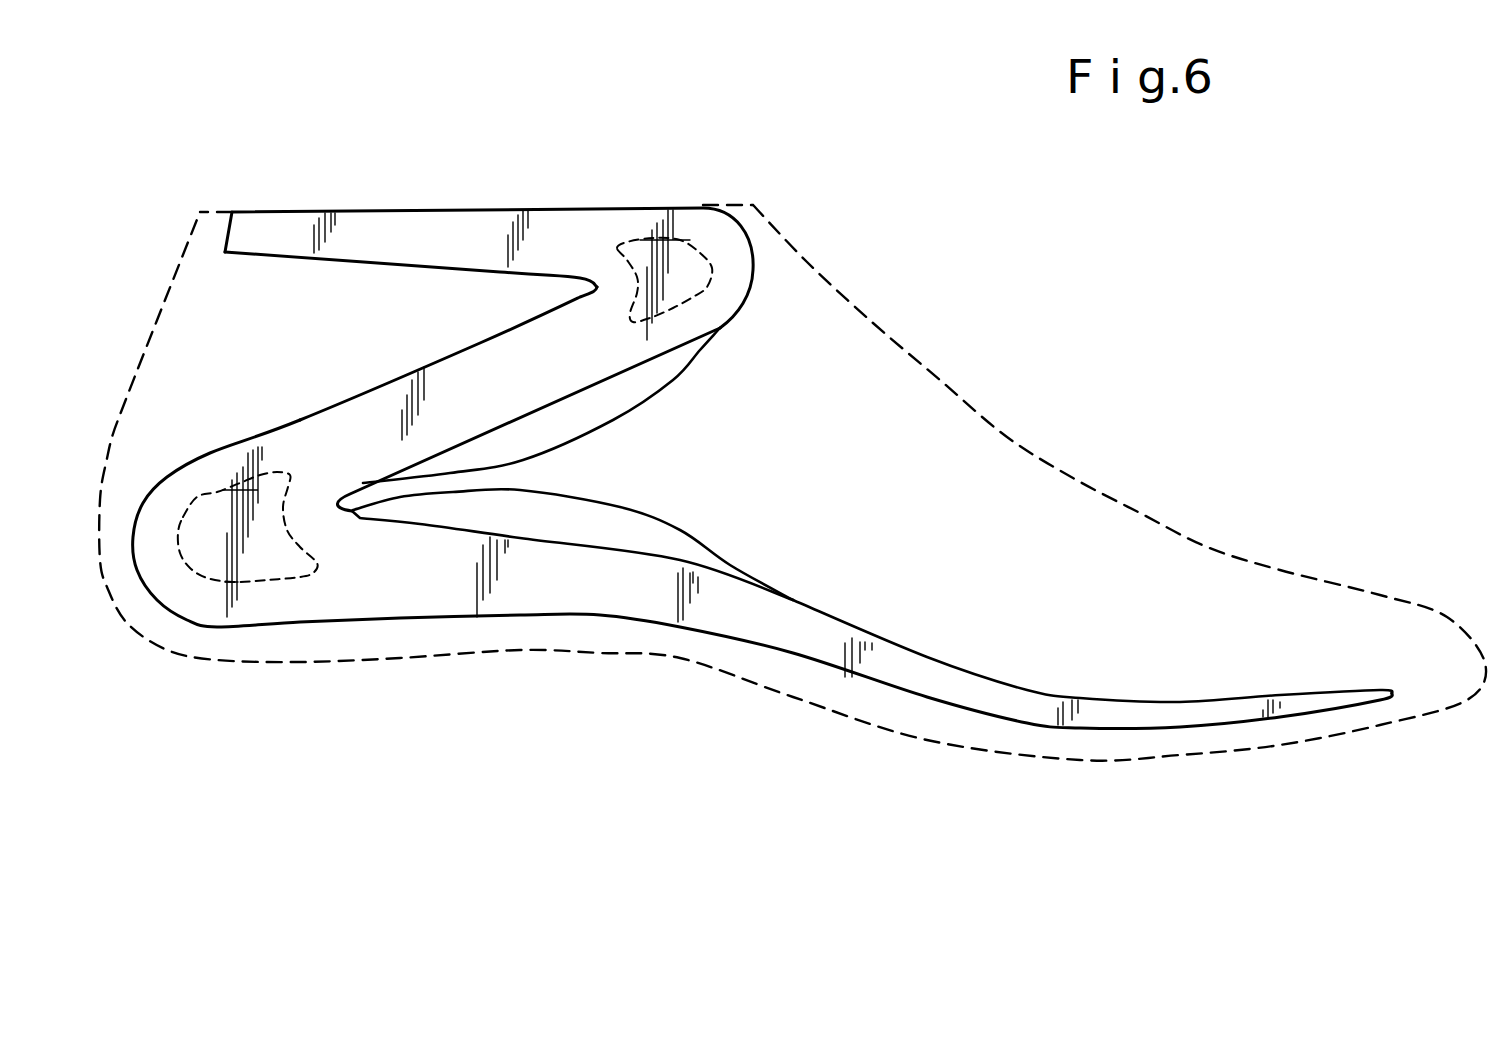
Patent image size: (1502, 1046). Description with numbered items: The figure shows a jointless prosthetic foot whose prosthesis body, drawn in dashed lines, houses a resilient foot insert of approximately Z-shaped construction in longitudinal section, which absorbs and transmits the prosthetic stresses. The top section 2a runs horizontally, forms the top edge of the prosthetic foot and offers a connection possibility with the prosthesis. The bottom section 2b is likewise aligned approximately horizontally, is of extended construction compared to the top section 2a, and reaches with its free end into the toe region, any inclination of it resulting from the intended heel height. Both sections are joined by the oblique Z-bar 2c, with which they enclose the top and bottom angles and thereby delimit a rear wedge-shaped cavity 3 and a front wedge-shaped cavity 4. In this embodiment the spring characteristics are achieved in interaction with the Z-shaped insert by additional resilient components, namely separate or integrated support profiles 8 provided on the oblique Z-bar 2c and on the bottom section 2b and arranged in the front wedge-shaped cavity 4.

The rear wedge-shaped cavity 3 is at (377, 317).
The top section 2a is at (523, 240).
The bottom section 2b is at (577, 588).
The oblique Z-bar 2c is at (485, 380).
The front wedge-shaped cavity 4 is at (698, 451).
The support profiles 8 is at (485, 518).